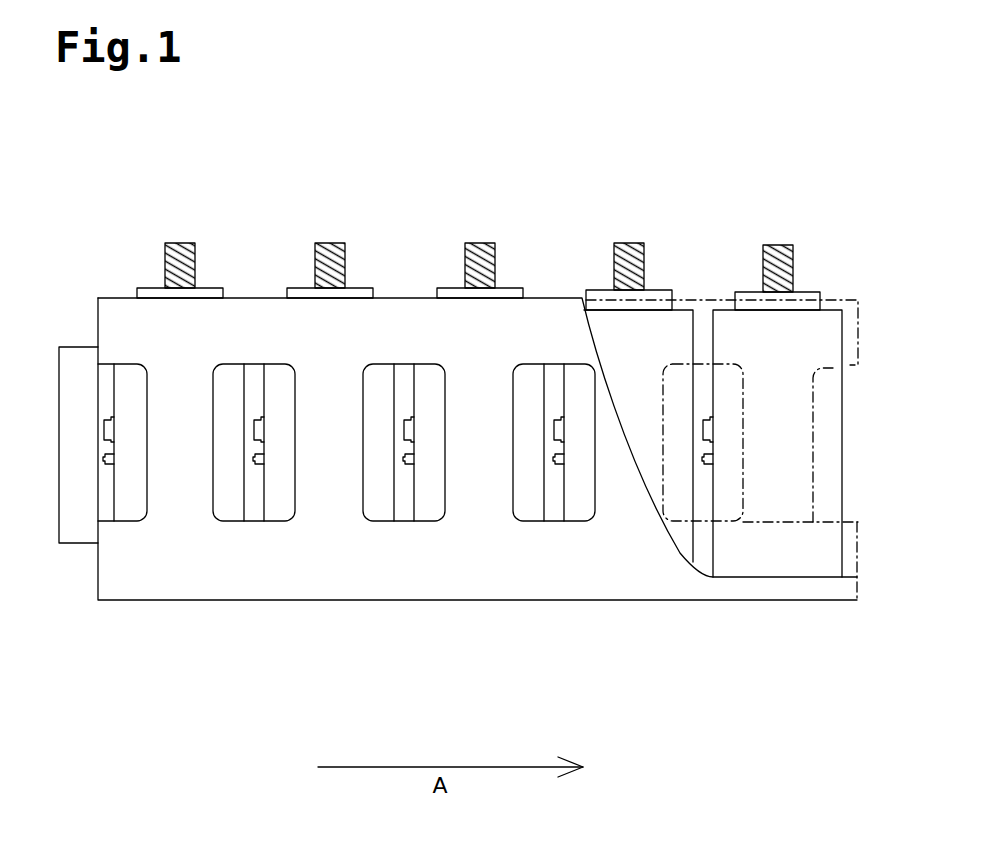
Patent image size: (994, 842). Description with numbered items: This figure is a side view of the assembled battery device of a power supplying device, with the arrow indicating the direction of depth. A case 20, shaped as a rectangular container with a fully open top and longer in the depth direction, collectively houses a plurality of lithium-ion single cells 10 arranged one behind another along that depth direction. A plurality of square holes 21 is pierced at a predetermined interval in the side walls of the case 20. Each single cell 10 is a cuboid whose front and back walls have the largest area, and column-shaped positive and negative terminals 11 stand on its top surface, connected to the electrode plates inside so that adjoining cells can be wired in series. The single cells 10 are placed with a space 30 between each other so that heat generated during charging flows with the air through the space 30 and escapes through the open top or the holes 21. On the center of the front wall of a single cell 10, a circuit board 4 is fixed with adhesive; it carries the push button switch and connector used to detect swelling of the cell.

The circuit board 4 is at (408, 471).
The single cell 10 is at (220, 280).
The positive and negative terminals 11 is at (178, 243).
The case 20 is at (218, 605).
The holes 21 is at (105, 403).
The space 30 is at (402, 397).